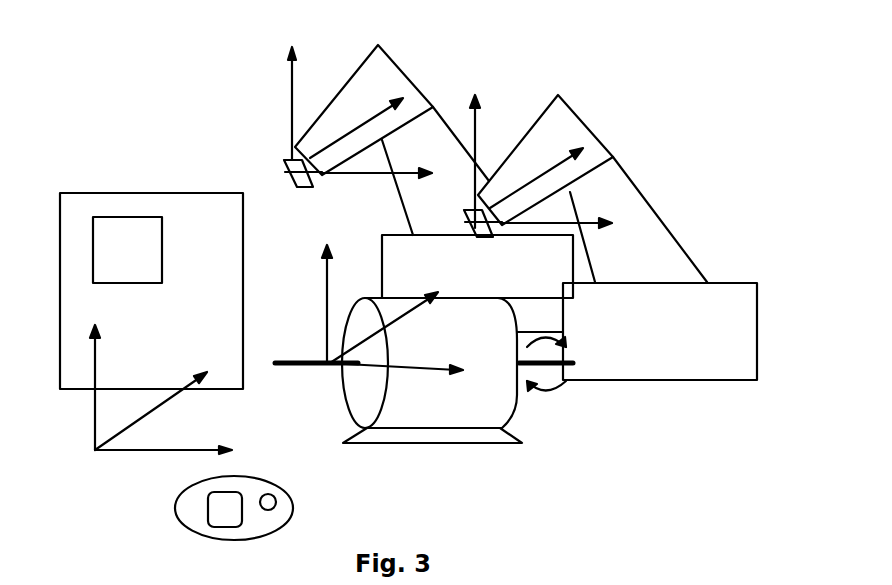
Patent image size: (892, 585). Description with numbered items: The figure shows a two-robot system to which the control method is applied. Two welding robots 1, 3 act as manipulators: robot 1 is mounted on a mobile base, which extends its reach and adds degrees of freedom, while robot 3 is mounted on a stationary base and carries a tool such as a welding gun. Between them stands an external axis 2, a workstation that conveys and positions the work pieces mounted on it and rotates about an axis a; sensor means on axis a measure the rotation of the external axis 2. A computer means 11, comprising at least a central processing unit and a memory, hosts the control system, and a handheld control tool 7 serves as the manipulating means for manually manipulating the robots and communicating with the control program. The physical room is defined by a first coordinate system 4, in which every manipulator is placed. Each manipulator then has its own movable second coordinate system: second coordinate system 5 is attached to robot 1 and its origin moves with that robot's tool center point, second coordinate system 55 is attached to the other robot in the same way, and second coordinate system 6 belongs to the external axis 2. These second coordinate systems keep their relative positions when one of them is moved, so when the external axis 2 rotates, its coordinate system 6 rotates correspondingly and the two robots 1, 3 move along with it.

The robot 1 is at (443, 148).
The external axis 2 is at (515, 410).
The robot 3 is at (642, 235).
The first coordinate system 4 is at (177, 453).
The second coordinate system 5 is at (292, 95).
The second coordinate system 6 is at (327, 292).
The handheld control tool 7 is at (243, 485).
The computer means 11 is at (127, 233).
The second coordinate system 55 is at (530, 208).
The axis a is at (325, 358).